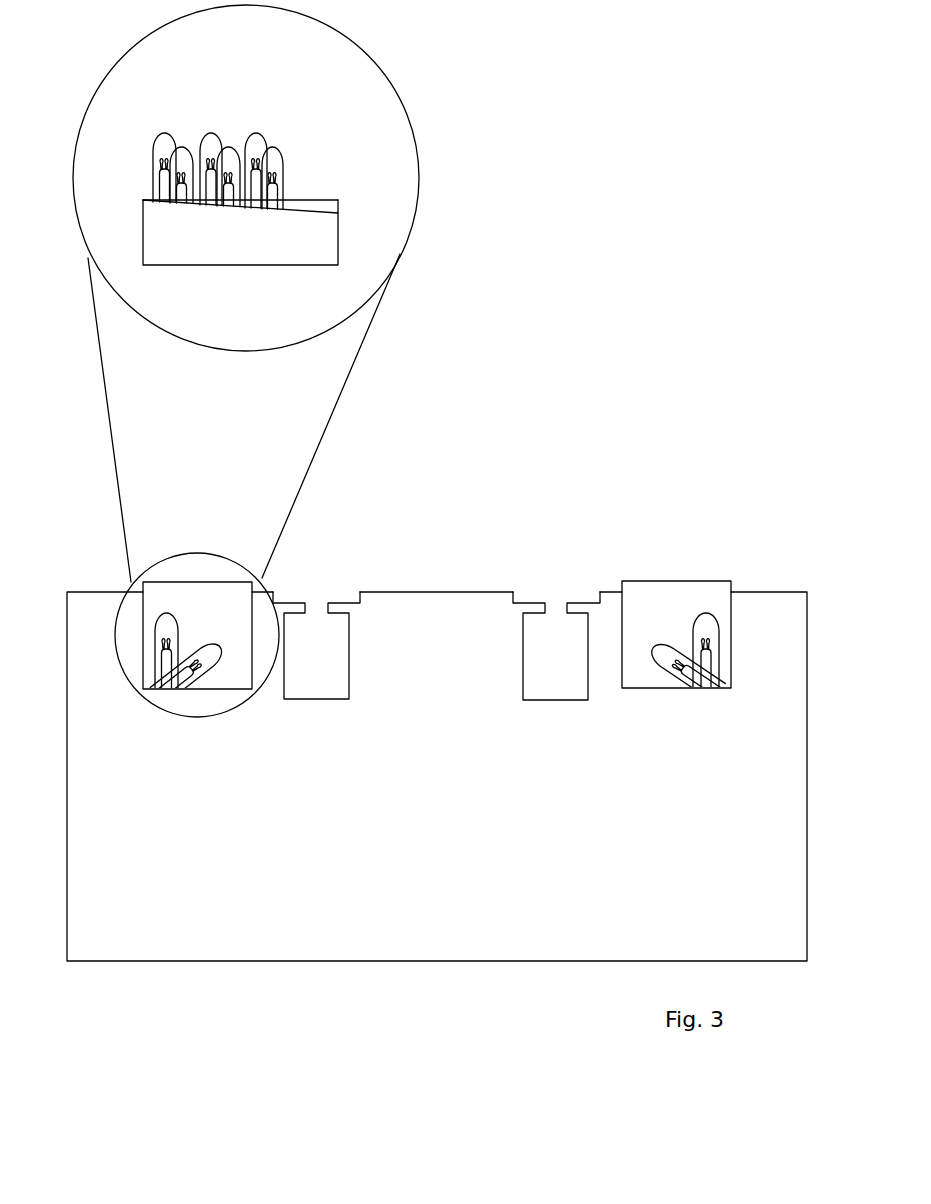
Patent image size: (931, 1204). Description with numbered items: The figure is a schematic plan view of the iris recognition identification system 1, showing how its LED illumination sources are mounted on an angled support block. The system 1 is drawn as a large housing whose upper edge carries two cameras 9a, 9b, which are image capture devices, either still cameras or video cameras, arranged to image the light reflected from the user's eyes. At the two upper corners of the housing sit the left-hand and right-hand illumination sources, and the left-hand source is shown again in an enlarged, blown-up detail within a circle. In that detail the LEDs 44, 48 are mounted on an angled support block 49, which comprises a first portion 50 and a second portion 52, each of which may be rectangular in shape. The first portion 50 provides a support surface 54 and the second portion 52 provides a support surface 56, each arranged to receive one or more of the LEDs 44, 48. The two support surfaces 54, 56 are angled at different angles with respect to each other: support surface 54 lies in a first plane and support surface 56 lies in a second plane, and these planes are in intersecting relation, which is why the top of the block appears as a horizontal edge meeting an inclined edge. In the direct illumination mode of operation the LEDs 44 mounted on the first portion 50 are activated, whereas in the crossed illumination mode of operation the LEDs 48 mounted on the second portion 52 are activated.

The iris recognition identification system 1 is at (807, 810).
The camera 9a is at (318, 699).
The camera 9b is at (550, 700).
The LEDs 44 is at (215, 136).
The LEDs 48 is at (277, 151).
The angled support block 49 is at (244, 182).
The first portion 50 is at (264, 212).
The second portion 52 is at (340, 257).
The support surface 54 is at (288, 199).
The support surface 56 is at (313, 211).